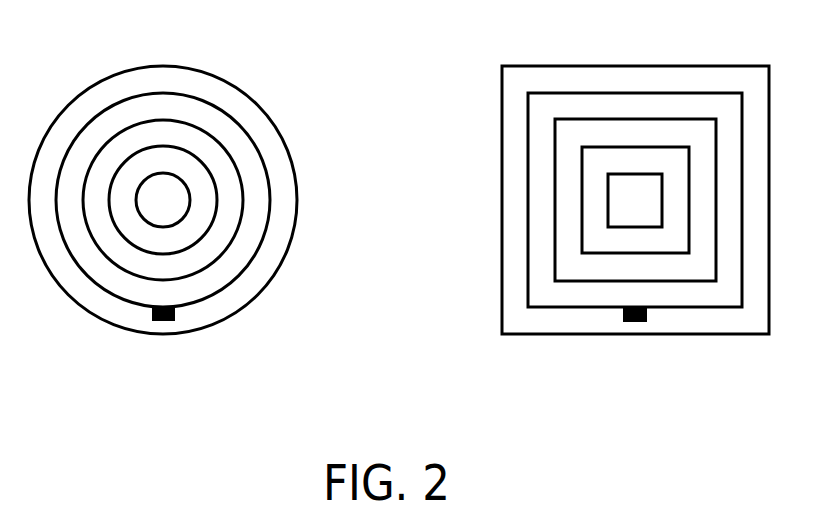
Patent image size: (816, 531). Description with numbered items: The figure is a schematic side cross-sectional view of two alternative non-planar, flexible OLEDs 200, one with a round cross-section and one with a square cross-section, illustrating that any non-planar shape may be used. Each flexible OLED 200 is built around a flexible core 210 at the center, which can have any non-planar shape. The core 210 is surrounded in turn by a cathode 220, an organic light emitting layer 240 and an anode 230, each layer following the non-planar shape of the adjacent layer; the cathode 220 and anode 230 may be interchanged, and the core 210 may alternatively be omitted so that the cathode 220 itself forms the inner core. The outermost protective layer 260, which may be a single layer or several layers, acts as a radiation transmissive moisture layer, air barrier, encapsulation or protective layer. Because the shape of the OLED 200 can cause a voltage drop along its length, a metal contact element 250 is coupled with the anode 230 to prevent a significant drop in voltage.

The flexible OLED 200 is at (146, 12).
The flexible core 210 is at (635, 200).
The cathode 220 is at (582, 217).
The anode 230 is at (529, 163).
The organic light emitting layer 240 is at (233, 242).
The metal contact element 250 is at (623, 318).
The protective layer 260 is at (280, 131).